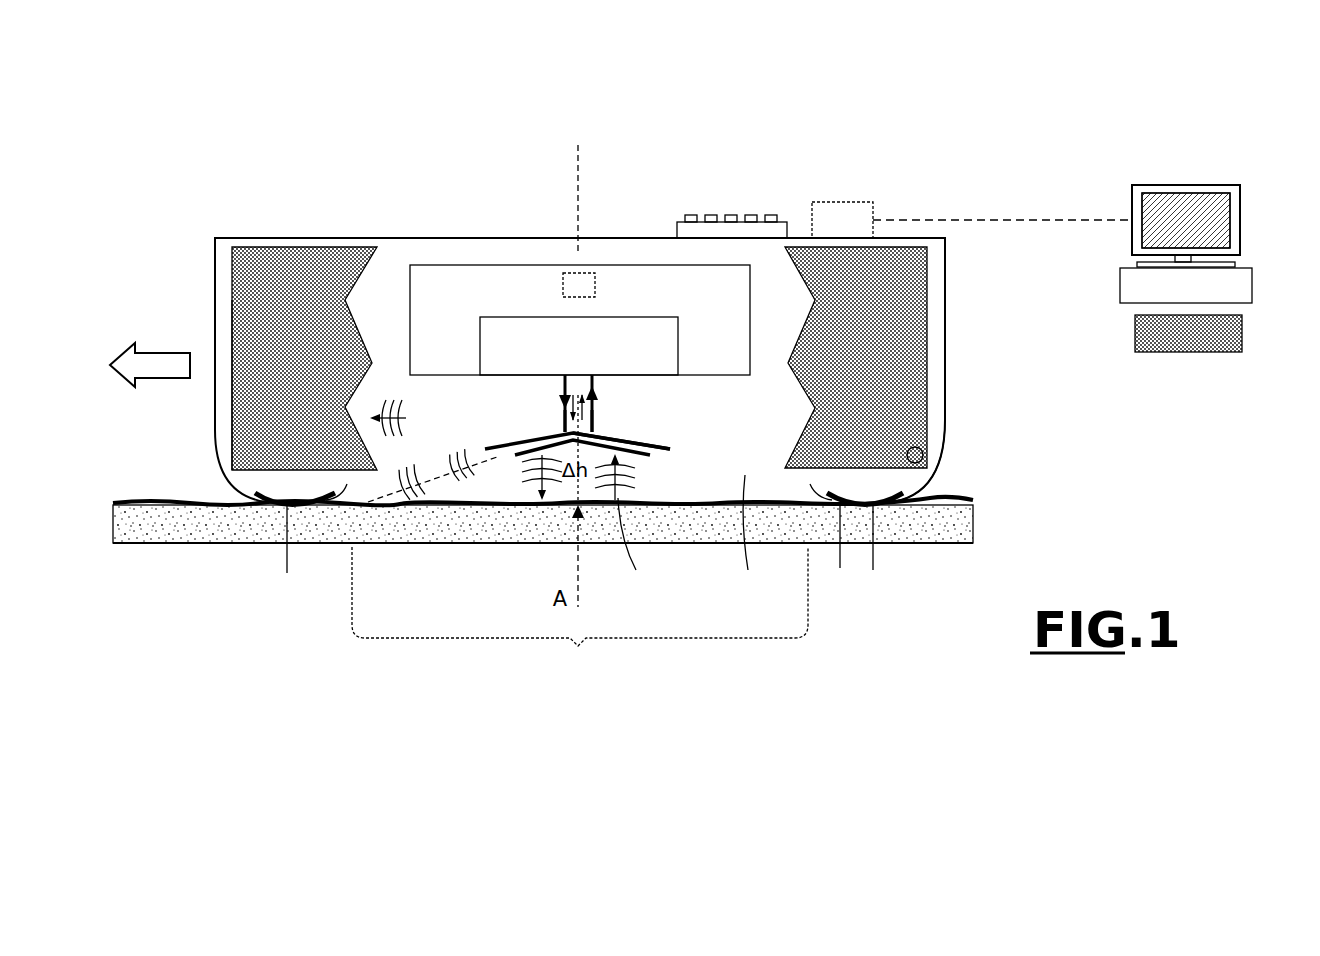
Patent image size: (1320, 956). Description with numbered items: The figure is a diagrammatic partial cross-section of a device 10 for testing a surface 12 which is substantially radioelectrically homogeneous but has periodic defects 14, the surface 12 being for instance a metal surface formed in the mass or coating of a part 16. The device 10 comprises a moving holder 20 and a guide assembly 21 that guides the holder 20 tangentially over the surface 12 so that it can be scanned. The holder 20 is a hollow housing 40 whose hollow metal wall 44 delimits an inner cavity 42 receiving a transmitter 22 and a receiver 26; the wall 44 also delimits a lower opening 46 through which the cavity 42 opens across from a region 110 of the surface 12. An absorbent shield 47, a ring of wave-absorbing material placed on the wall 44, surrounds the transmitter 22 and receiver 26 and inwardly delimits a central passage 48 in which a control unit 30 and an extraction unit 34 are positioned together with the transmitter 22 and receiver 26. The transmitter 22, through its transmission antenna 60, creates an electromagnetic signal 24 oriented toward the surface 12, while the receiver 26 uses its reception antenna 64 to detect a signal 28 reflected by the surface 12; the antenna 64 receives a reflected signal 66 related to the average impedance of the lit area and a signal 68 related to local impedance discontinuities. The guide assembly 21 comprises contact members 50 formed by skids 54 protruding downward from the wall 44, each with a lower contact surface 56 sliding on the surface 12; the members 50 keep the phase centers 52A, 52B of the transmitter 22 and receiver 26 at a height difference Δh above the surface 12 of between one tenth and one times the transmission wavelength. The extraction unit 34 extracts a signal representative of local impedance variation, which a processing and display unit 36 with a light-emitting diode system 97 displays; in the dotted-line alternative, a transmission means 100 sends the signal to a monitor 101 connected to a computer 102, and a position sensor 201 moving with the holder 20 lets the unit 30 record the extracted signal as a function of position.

The device for testing a surface 10 is at (957, 304).
The surface 12 is at (130, 496).
The periodic defects 14 is at (345, 520).
The part 16 is at (180, 553).
The moving holder 20 is at (590, 232).
The guide assembly 21 is at (915, 492).
The transmitter 22 is at (512, 432).
The electromagnetic signal 24 is at (398, 420).
The receiver 26 is at (648, 435).
The reflected signal 28 is at (643, 478).
The control unit 30 is at (404, 327).
The extraction unit 34 is at (475, 346).
The processing and display unit 36 is at (743, 215).
The hollow housing 40 is at (214, 258).
The inner cavity 42 is at (393, 255).
The hollow metal wall 44 is at (290, 238).
The lower opening 46 is at (748, 536).
The absorbent shield 47 is at (245, 310).
The central passage 48 is at (790, 398).
The contact members 50 is at (579, 551).
The phase center of the transmitter 52A is at (578, 400).
The phase center of the receiver 52B is at (600, 405).
The skids 54 is at (245, 480).
The lower contact surface 56 is at (835, 551).
The transmission antenna 60 is at (563, 432).
The reception antenna 64 is at (594, 432).
The reflected signal 66 is at (640, 547).
The signal related to impedance discontinuity 68 is at (455, 464).
The light-emitting diode system 97 is at (702, 222).
The transmission means for transmitting the signal 100 is at (845, 202).
The monitor 101 is at (1142, 203).
The computer 102 is at (1250, 282).
The region of the surface 110 is at (580, 612).
The position sensor 201 is at (597, 287).